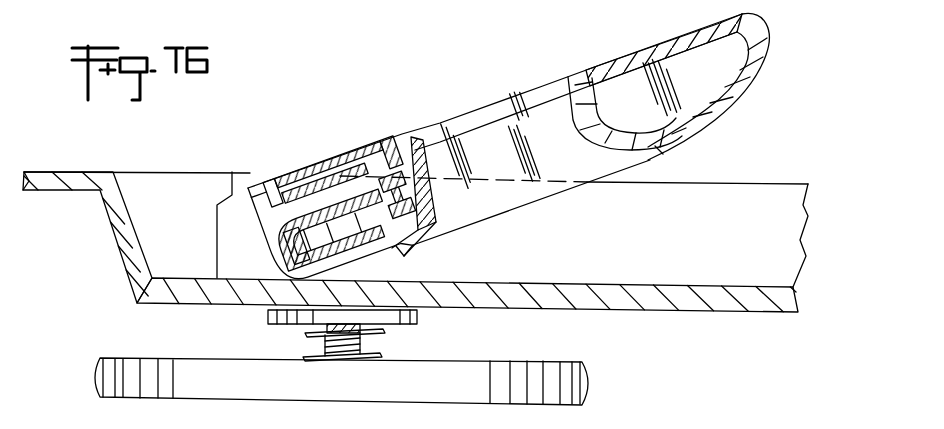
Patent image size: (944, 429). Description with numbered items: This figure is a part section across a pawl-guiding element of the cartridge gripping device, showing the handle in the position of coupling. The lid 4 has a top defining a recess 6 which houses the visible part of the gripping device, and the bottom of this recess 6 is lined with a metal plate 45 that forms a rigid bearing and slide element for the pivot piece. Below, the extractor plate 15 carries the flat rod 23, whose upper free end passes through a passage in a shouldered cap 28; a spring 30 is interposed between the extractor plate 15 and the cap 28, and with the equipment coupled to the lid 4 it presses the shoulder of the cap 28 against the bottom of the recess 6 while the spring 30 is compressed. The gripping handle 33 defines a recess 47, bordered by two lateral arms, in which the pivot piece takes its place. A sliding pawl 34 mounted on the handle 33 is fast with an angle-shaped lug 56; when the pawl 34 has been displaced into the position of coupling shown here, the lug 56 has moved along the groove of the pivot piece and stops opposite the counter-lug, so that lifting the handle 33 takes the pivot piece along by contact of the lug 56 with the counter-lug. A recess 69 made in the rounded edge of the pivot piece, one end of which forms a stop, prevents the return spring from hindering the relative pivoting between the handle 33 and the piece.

The lid 4 is at (69, 167).
The recess 6 is at (153, 187).
The extractor plate 15 is at (180, 387).
The flat rod 23 is at (313, 352).
The shouldered cap 28 is at (415, 321).
The spring 30 is at (380, 352).
The gripping handle 33 is at (772, 55).
The sliding pawl 34 is at (328, 162).
The metal plate 45 is at (267, 280).
The recess 47 is at (310, 200).
The angle-shaped lug 56 is at (362, 147).
The recess 69 is at (278, 240).